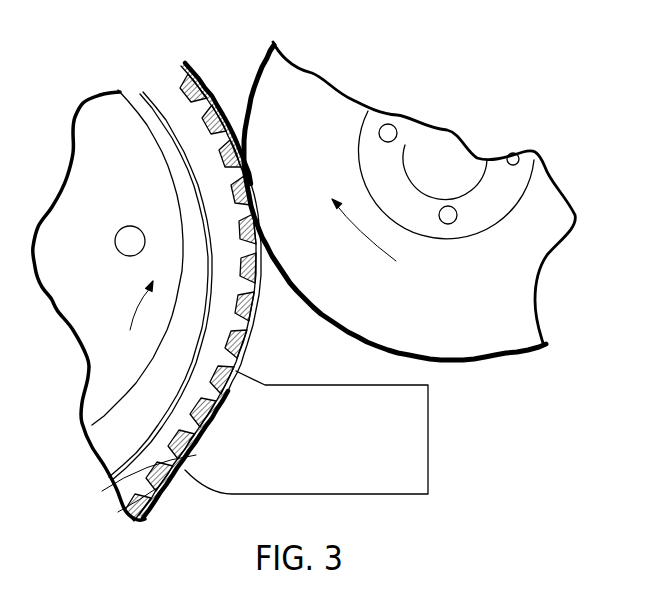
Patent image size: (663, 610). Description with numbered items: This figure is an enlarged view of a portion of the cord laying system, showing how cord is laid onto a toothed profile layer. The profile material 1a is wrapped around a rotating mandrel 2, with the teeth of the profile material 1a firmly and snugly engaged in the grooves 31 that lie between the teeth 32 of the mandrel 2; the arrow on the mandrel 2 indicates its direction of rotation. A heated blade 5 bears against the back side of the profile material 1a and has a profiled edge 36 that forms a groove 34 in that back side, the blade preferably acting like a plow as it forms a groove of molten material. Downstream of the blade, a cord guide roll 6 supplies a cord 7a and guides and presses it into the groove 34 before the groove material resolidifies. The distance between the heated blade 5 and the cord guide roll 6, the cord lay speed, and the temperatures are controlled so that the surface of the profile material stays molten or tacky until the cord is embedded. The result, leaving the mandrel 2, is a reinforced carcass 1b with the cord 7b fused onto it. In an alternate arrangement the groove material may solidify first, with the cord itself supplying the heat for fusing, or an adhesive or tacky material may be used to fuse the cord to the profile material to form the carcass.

The profile material 1a is at (172, 478).
The reinforced carcass 1b is at (175, 89).
The mandrel 2 is at (97, 421).
The heated blade 5 is at (378, 493).
The cord guide roll 6 is at (509, 340).
The cord 7a is at (452, 363).
The cord 7b is at (190, 92).
The grooves 31 is at (122, 506).
The teeth 32 is at (115, 483).
The groove 34 is at (258, 319).
The profiled edge 36 is at (240, 391).